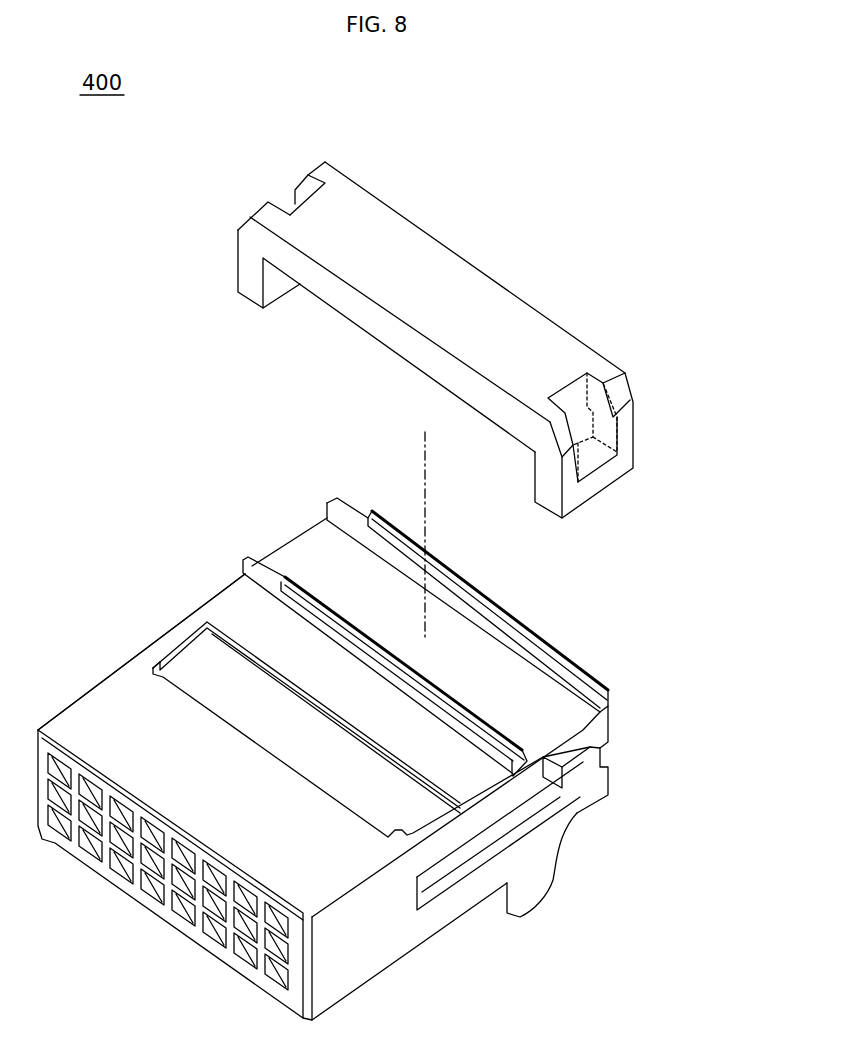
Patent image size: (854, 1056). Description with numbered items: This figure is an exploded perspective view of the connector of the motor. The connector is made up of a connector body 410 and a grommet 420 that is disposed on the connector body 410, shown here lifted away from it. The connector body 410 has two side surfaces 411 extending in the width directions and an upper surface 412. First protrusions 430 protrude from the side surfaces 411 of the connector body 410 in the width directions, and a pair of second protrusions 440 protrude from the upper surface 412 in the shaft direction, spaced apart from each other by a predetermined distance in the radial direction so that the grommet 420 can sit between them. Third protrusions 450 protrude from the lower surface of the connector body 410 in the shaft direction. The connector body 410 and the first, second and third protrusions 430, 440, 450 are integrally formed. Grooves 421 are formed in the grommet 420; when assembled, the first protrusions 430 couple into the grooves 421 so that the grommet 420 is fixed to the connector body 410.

The connector body 410 is at (361, 759).
The side surfaces 411 is at (358, 963).
The upper surface 412 is at (115, 705).
The grommet 420 is at (484, 325).
The grooves 421 is at (588, 422).
The first protrusions 430 is at (568, 762).
The second protrusions 440 is at (440, 664).
The third protrusions 450 is at (530, 890).